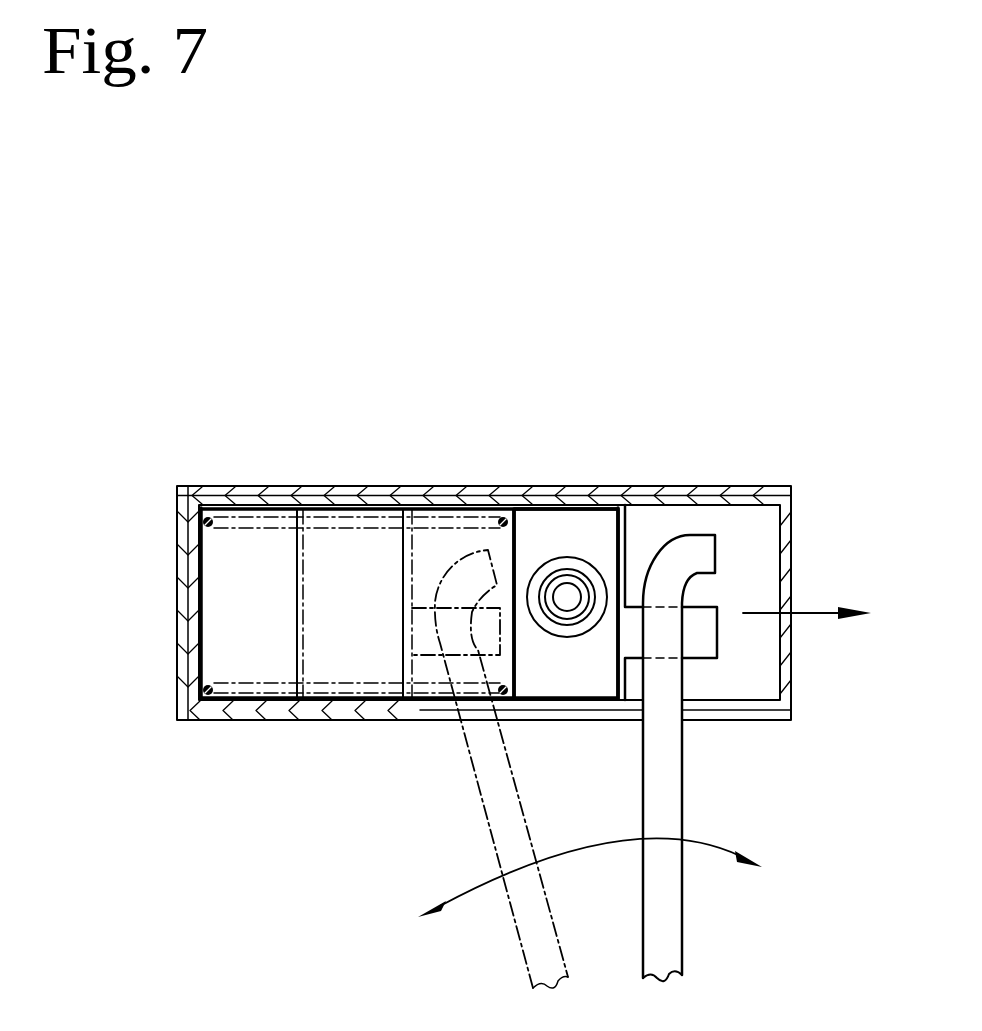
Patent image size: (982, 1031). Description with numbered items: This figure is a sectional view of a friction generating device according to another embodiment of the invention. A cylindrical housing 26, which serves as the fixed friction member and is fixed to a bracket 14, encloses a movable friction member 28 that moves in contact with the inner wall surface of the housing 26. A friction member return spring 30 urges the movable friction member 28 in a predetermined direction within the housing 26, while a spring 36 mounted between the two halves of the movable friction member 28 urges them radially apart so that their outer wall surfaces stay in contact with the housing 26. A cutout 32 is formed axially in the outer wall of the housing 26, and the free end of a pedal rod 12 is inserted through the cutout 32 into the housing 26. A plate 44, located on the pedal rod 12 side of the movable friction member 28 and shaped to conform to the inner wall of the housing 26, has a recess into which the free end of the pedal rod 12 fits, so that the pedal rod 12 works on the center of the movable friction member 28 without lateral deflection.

The pedal rod 12 is at (505, 795).
The bracket 14 is at (459, 493).
The housing 26 is at (348, 506).
The movable friction member 28 is at (561, 535).
The friction member return spring 30 is at (262, 527).
The cutout 32 is at (427, 717).
The spring 36 is at (565, 622).
The plate 44 is at (695, 615).